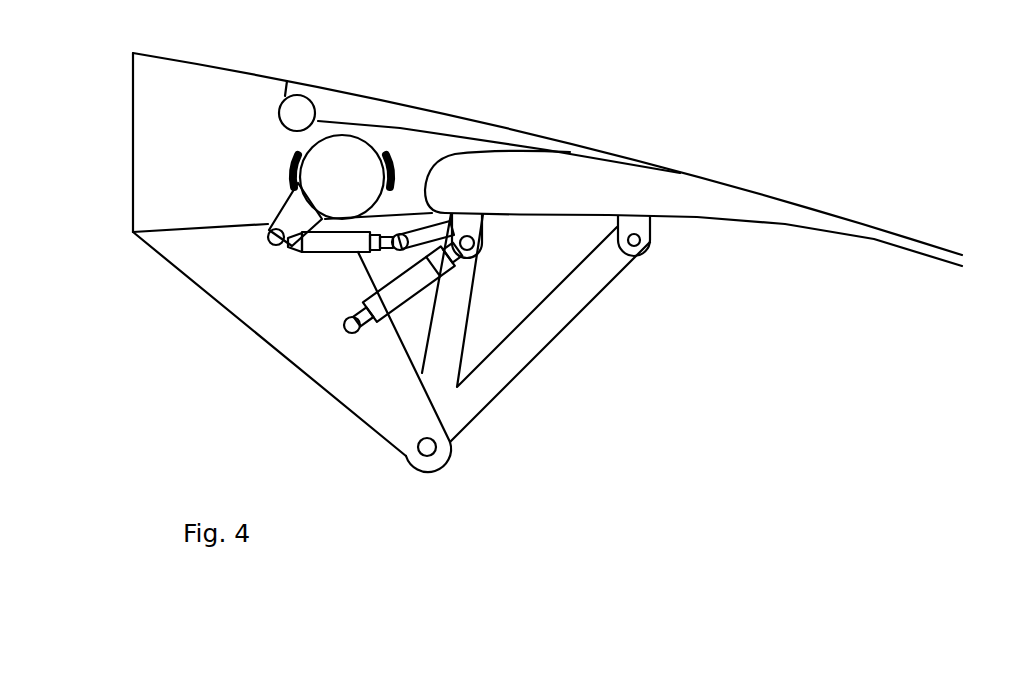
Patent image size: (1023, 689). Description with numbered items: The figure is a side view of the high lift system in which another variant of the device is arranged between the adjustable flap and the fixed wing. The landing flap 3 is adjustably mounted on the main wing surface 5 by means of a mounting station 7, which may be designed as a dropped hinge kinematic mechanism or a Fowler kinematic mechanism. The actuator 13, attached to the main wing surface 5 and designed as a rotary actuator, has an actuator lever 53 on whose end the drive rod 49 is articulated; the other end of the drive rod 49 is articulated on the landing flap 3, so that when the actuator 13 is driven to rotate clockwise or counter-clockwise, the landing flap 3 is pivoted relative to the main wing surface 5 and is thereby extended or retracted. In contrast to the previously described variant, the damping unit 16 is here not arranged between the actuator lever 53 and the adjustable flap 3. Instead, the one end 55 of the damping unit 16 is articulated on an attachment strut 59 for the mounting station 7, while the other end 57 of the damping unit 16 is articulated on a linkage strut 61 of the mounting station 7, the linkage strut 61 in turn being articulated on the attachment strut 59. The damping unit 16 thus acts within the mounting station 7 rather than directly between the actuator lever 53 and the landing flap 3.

The landing flap 3 is at (750, 192).
The main wing surface 5 is at (497, 125).
The mounting station 7 is at (582, 348).
The actuator 13 is at (353, 158).
The damping unit 16 is at (400, 306).
The drive rod 49 is at (371, 231).
The actuator lever 53 is at (275, 215).
The one end of the damping unit 55 is at (357, 335).
The other end of the damping unit 57 is at (484, 229).
The attachment strut 59 is at (265, 338).
The linkage strut 61 is at (479, 293).